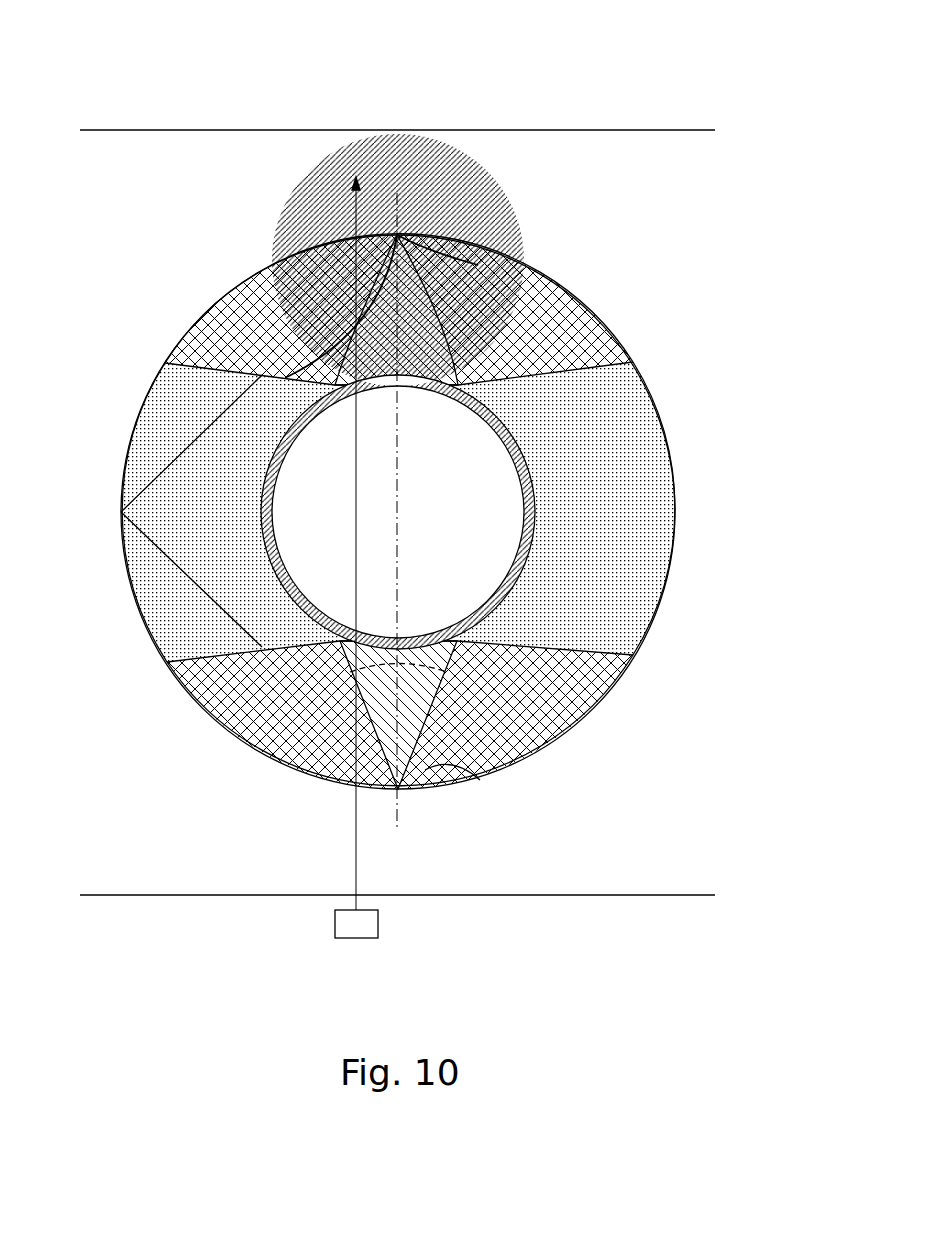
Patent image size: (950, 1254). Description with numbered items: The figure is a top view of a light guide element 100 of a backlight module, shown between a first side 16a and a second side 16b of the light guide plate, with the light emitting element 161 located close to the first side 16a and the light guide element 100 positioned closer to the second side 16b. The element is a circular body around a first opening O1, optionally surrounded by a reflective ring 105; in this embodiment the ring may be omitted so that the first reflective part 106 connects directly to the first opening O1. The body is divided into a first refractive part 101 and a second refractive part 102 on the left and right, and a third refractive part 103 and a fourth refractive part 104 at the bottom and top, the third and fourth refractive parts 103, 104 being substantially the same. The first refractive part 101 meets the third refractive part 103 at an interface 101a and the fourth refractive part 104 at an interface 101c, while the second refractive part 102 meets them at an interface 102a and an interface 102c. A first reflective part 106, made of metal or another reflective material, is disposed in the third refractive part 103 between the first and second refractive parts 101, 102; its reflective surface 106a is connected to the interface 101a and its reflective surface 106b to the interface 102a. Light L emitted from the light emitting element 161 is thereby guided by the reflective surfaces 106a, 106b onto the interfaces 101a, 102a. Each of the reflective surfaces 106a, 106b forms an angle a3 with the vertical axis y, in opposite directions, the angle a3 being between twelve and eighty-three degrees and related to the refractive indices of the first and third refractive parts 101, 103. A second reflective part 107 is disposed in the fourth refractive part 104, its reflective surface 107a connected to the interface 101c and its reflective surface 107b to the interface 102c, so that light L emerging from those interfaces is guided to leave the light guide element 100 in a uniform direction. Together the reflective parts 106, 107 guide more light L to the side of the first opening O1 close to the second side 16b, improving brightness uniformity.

The light guide element 100 is at (58, 40).
The first side 16a is at (695, 897).
The second side 16b is at (695, 129).
The first refractive part 101 is at (238, 524).
The second refractive part 102 is at (628, 524).
The third refractive part 103 is at (292, 716).
The fourth refractive part 104 is at (292, 334).
The reflective ring 105 is at (530, 467).
The first reflective part 106 is at (380, 650).
The second reflective part 107 is at (372, 382).
The interface 101a is at (167, 662).
The interface 101c is at (165, 363).
The interface 102a is at (633, 655).
The interface 102c is at (633, 362).
The reflective surface 106a is at (380, 792).
The reflective surface 106b is at (480, 780).
The reflective surface 107a is at (377, 233).
The reflective surface 107b is at (478, 265).
The light emitting element 161 is at (352, 938).
The light L is at (356, 825).
The vertical axis y is at (400, 812).
The first opening O1 is at (488, 548).
The angle a3 is at (378, 667).